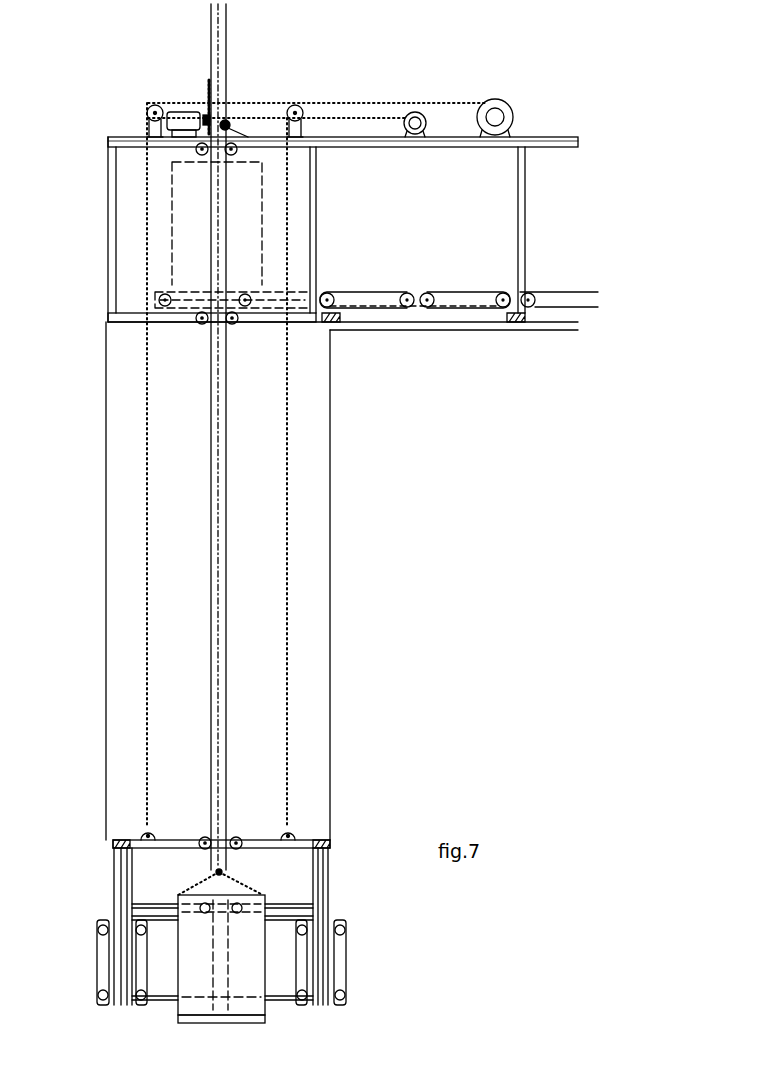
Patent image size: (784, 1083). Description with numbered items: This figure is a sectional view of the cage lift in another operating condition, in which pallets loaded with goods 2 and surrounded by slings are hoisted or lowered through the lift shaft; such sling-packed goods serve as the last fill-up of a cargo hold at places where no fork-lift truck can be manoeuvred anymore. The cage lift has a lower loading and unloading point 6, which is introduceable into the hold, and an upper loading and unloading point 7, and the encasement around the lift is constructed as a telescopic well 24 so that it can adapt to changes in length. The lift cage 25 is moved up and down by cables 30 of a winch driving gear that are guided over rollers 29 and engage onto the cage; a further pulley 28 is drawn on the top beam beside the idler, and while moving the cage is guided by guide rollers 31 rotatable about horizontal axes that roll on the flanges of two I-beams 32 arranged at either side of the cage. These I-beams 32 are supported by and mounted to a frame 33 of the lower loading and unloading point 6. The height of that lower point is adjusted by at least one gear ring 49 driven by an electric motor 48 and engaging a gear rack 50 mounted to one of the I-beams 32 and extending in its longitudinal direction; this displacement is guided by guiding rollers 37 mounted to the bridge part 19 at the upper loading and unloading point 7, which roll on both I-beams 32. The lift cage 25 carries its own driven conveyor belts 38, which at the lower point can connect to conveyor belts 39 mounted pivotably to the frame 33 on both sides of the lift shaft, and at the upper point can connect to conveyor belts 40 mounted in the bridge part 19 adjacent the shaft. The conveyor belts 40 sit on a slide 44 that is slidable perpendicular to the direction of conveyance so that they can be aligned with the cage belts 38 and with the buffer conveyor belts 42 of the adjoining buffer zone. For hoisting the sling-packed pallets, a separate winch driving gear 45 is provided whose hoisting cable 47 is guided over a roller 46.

The goods 2 is at (240, 978).
The lower loading and unloading point 6 is at (117, 1010).
The upper loading and unloading point 7 is at (347, 336).
The bridge part 19 is at (556, 329).
The telescopic well 24 is at (330, 522).
The lift cage 25 is at (305, 836).
The drive pulley 28 is at (500, 105).
The rollers 29 is at (142, 105).
The cables 30 is at (147, 467).
The guide rollers 31 is at (237, 837).
The I-beams 32 is at (222, 52).
The frame 33 is at (327, 875).
The guiding rollers 37 is at (231, 155).
The conveyor belts 38 is at (143, 953).
The conveyor belts 39 is at (102, 973).
The conveyor belts 40 is at (370, 307).
The buffer conveyor belts 42 is at (573, 300).
The slide 44 is at (163, 303).
The winch driving gear 45 is at (417, 113).
The roller 46 is at (224, 122).
The hoisting cable 47 is at (227, 467).
The electric motor 48 is at (178, 115).
The gear ring 49 is at (207, 118).
The gear rack 50 is at (210, 92).